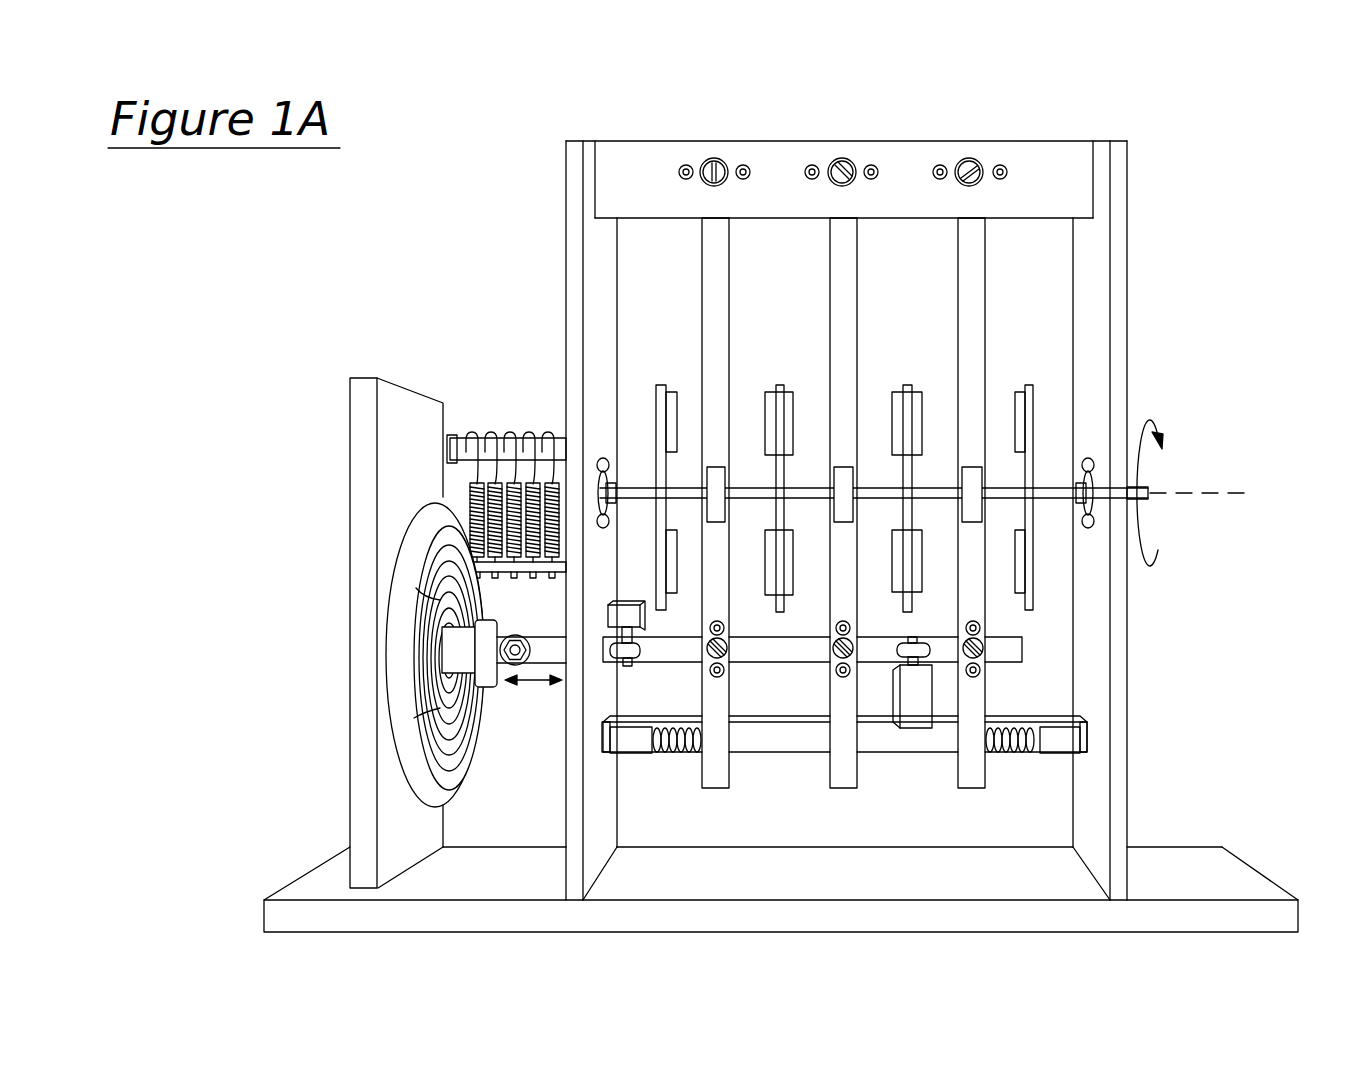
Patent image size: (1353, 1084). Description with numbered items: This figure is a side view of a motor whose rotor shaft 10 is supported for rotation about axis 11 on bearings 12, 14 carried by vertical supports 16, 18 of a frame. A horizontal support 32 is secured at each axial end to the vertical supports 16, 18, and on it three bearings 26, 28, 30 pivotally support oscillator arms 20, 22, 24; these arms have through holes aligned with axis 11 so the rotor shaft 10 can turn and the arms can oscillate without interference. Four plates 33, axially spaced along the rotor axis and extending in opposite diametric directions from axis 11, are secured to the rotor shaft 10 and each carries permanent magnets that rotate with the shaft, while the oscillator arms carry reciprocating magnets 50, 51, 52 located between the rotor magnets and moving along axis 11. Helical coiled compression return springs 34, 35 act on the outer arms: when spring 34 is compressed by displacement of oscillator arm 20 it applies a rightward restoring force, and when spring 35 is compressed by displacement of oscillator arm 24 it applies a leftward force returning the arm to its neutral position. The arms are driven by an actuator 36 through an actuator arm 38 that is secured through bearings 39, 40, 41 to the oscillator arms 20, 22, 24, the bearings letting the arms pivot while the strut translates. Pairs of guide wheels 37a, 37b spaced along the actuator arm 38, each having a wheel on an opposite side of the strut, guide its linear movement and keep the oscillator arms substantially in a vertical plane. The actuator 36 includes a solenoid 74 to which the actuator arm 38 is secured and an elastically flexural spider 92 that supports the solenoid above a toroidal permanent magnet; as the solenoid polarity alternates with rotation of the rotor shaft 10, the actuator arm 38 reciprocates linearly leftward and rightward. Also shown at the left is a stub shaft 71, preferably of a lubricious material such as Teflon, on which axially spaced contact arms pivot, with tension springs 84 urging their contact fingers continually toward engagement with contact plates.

The rotor shaft 10 is at (1143, 500).
The axis 11 is at (1197, 492).
The bearing 12 is at (1077, 493).
The bearing 14 is at (610, 487).
The vertical support 16 is at (1118, 340).
The vertical support 18 is at (573, 280).
The oscillator arm 20 is at (700, 330).
The oscillator arm 22 is at (828, 330).
The oscillator arm 24 is at (956, 330).
The bearing 26 is at (728, 160).
The bearing 28 is at (853, 160).
The bearing 30 is at (958, 158).
The horizontal support 32 is at (1060, 155).
The plate 33 is at (661, 385).
The return spring 34 is at (687, 755).
The return spring 35 is at (993, 760).
The actuator 36 is at (488, 392).
The guide wheel pair 37a is at (633, 650).
The guide wheel pair 37b is at (930, 652).
The actuator arm 38 is at (795, 650).
The bearing 39 is at (727, 648).
The bearing 40 is at (853, 648).
The bearing 41 is at (983, 648).
The reciprocating magnet 50 is at (716, 510).
The reciprocating magnet 51 is at (842, 510).
The reciprocating magnet 52 is at (972, 510).
The stub shaft 71 is at (463, 438).
The solenoid 74 is at (460, 688).
The tension spring 84 is at (490, 572).
The spider 92 is at (448, 738).